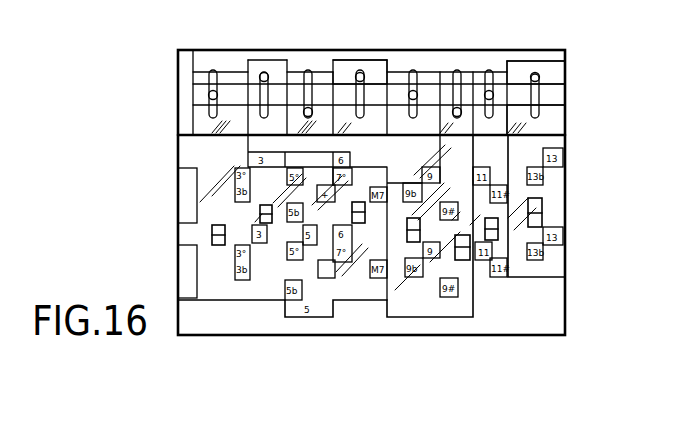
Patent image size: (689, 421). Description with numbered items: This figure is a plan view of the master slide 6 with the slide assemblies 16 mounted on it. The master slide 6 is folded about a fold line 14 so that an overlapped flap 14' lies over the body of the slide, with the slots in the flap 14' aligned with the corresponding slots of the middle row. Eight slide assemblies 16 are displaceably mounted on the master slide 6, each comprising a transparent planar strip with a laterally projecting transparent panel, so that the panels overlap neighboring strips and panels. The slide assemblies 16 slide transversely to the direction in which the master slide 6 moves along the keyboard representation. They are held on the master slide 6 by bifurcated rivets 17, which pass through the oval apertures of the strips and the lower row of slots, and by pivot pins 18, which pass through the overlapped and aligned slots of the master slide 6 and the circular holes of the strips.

The master slide 6 is at (443, 64).
The fold line 14 is at (371, 76).
The overlapped flap 14' is at (561, 117).
The slide assembly 16 is at (380, 61).
The bifurcated rivet 17 is at (208, 233).
The pivot pin 18 is at (266, 72).